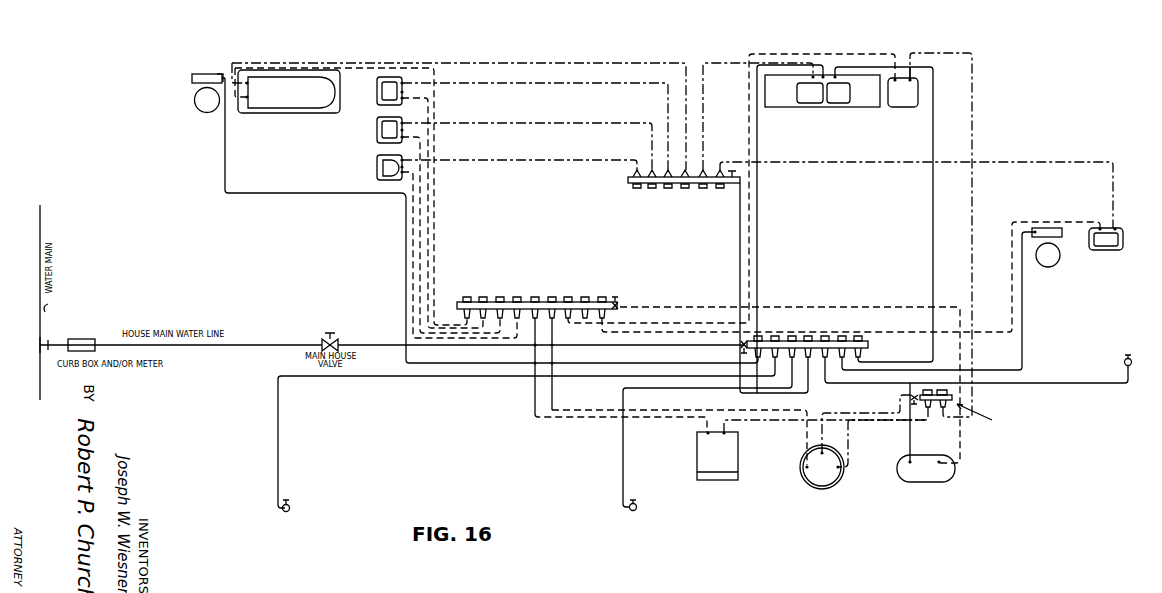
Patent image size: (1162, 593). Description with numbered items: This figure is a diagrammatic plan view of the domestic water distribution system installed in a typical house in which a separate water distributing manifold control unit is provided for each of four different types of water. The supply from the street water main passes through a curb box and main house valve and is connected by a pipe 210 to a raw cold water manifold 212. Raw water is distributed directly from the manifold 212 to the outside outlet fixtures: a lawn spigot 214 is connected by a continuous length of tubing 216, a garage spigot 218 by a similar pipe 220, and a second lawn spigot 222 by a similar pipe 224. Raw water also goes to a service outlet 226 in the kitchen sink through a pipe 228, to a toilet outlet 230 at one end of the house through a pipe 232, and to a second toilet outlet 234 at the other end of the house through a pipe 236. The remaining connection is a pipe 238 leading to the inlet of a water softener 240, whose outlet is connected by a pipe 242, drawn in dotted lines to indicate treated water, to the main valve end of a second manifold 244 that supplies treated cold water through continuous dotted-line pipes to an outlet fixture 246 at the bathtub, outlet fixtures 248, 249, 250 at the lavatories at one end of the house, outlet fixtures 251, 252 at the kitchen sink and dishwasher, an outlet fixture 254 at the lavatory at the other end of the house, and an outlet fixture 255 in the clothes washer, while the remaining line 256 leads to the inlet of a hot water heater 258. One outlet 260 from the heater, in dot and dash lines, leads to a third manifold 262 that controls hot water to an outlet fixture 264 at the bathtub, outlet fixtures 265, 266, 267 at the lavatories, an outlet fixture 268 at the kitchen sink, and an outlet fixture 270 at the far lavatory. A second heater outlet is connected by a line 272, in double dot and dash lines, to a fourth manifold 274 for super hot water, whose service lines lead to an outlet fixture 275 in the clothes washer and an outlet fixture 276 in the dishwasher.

The pipe 210 is at (478, 346).
The raw cold water manifold 212 is at (868, 345).
The lawn spigot 214 is at (291, 510).
The tubing 216 is at (428, 378).
The garage spigot 218 is at (636, 503).
The pipe 220 is at (660, 389).
The second lawn spigot 222 is at (1128, 358).
The pipe 224 is at (1012, 384).
The service outlet 226 is at (836, 74).
The pipe 228 is at (931, 239).
The toilet outlet 230 is at (1036, 228).
The pipe 232 is at (1023, 349).
The second toilet outlet 234 is at (219, 76).
The pipe 236 is at (404, 249).
The pipe 238 is at (806, 390).
The water softener 240 is at (955, 470).
The pipe 242 is at (820, 317).
The second manifold 244 is at (560, 300).
The outlet fixture 246 is at (250, 86).
The outlet fixture 248 is at (404, 99).
The outlet fixture 249 is at (404, 138).
The outlet fixture 250 is at (398, 181).
The outlet fixture 251 is at (822, 74).
The outlet fixture 252 is at (749, 188).
The outlet fixture 254 is at (1100, 228).
The outlet fixture 255 is at (706, 434).
The line 256 is at (570, 409).
The hot water heater 258 is at (818, 470).
The outlet 260 is at (744, 250).
The third manifold 262 is at (625, 181).
The outlet fixture 264 is at (250, 99).
The outlet fixture 265 is at (402, 167).
The outlet fixture 266 is at (402, 130).
The outlet fixture 267 is at (402, 92).
The outlet fixture 268 is at (811, 80).
The outlet fixture 270 is at (1116, 228).
The line 272 is at (849, 428).
The fourth manifold 274 is at (929, 410).
The outlet fixture 275 is at (726, 434).
The outlet fixture 276 is at (913, 81).